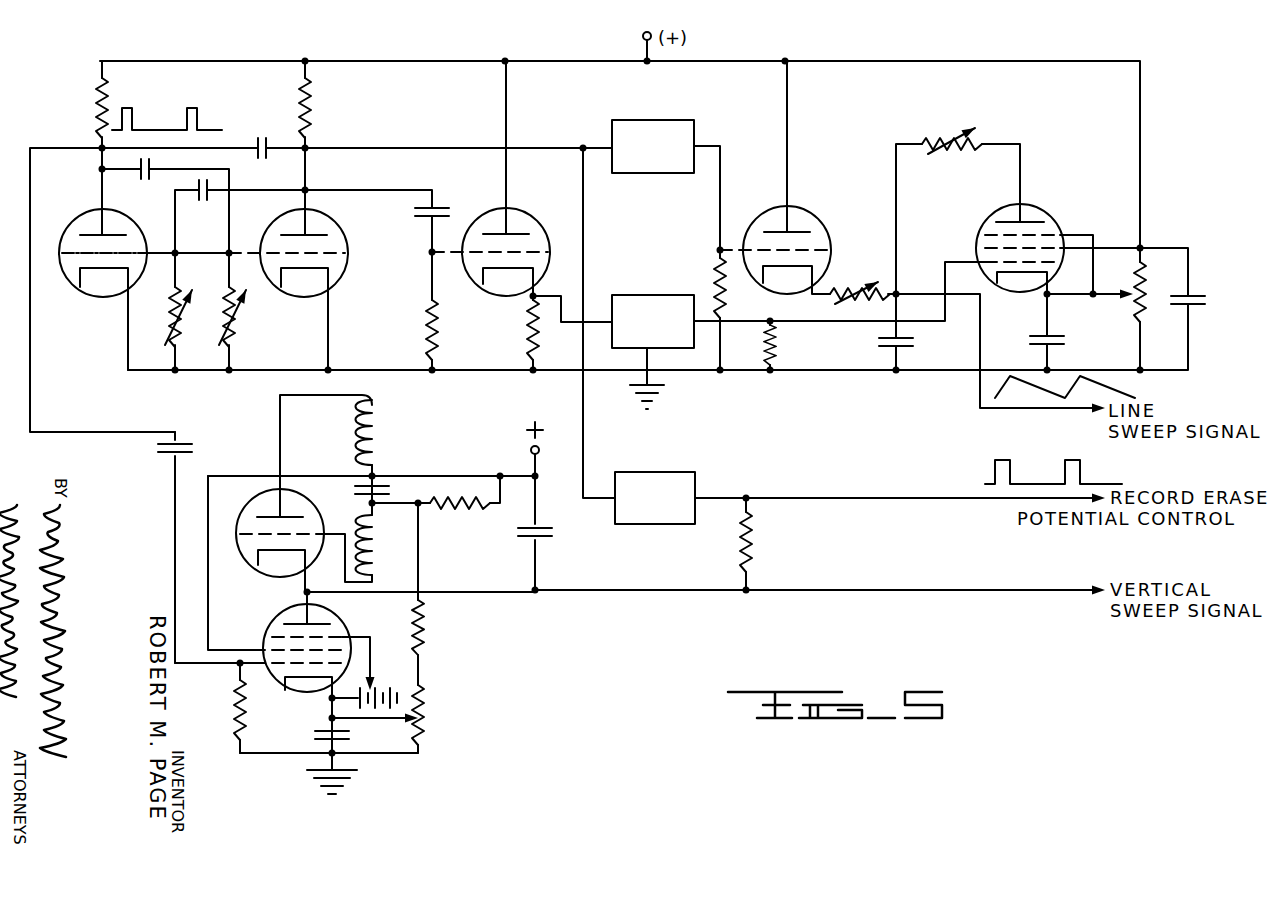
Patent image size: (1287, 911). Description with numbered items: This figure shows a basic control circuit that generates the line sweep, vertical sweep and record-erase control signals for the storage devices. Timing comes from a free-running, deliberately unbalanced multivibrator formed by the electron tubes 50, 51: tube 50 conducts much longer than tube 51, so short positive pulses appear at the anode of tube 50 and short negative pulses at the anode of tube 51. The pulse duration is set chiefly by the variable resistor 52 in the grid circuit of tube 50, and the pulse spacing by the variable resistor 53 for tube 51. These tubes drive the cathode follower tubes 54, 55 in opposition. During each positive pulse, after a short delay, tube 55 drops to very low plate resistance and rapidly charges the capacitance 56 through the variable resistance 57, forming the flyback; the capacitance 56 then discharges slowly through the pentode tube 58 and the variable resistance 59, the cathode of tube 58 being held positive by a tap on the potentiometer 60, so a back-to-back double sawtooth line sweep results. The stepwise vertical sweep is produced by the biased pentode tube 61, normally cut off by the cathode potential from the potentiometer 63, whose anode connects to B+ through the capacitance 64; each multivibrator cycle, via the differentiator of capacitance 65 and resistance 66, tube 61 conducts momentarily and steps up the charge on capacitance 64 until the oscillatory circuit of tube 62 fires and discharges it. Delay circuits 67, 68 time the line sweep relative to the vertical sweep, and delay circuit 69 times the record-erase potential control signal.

The electron tube 50 is at (148, 226).
The electron tube 51 is at (348, 222).
The variable resistor 52 is at (172, 322).
The variable resistor 53 is at (227, 322).
The cathode follower tube 54 is at (551, 224).
The cathode follower tube 55 is at (831, 222).
The capacitance 56 is at (913, 346).
The variable resistance 57 is at (856, 284).
The pentode tube 58 is at (1064, 220).
The variable resistance 59 is at (958, 136).
The potentiometer 60 is at (1148, 292).
The biased pentode tube 61 is at (360, 632).
The tube 62 is at (326, 512).
The potentiometer 63 is at (426, 712).
The capacitance 64 is at (549, 538).
The capacitance 65 is at (188, 452).
The resistance 66 is at (232, 698).
The delay circuit 67 is at (646, 118).
The delay circuit 68 is at (646, 293).
The delay circuit 69 is at (646, 473).